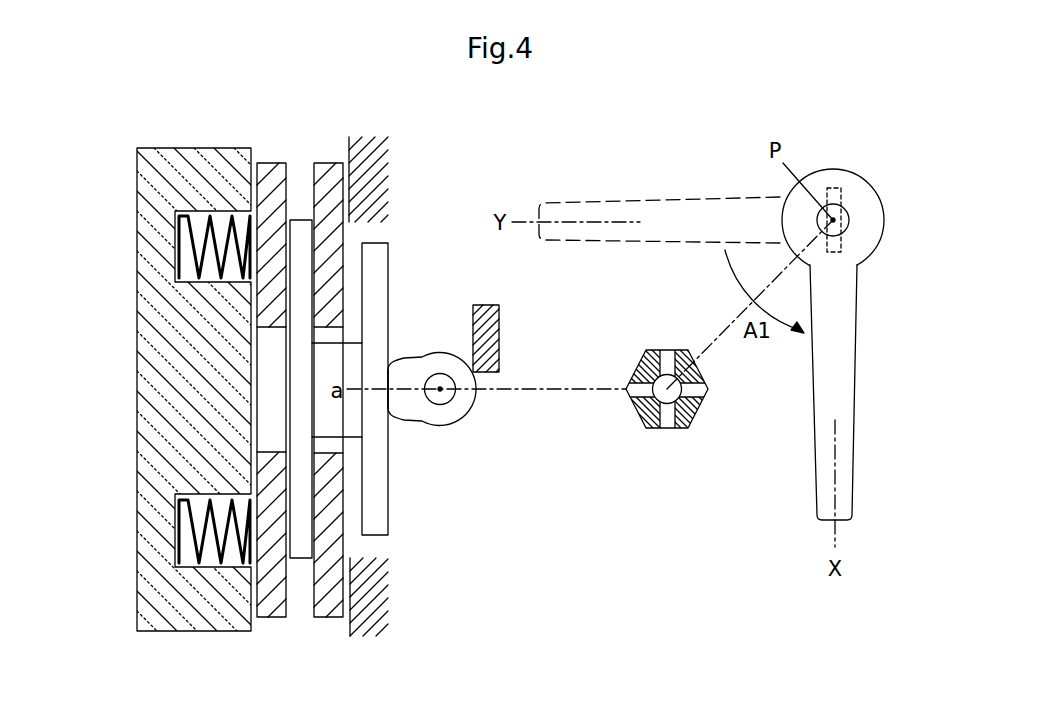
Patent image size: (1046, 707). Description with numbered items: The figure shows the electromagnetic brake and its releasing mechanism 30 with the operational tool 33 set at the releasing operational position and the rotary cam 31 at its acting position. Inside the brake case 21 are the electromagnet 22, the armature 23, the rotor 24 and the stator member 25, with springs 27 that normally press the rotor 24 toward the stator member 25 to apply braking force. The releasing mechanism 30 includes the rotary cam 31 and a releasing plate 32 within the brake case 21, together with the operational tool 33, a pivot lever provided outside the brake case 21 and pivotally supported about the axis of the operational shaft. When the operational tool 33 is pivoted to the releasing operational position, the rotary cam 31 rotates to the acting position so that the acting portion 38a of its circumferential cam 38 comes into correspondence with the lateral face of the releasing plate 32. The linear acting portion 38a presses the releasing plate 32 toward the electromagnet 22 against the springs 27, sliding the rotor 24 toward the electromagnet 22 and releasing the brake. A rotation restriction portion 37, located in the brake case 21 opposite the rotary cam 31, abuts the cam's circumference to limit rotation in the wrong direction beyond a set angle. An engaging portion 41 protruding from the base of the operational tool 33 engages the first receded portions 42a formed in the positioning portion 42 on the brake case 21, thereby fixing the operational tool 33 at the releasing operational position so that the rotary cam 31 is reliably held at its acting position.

The brake case 21 is at (365, 175).
The electromagnet 22 is at (157, 400).
The armature 23 is at (270, 172).
The rotor 24 is at (300, 222).
The stator member 25 is at (330, 170).
The spring 27 is at (173, 242).
The releasing mechanism 30 is at (451, 192).
The rotary cam 31 is at (453, 413).
The releasing plate 32 is at (375, 495).
The operational tool 33 is at (852, 392).
The rotation restriction portion 37 is at (490, 342).
The circumferential cam 38 is at (446, 339).
The acting portion 38a is at (395, 378).
The engaging portion 41 is at (862, 183).
The positioning portion 42 is at (652, 392).
The first receded portion 42a is at (667, 360).